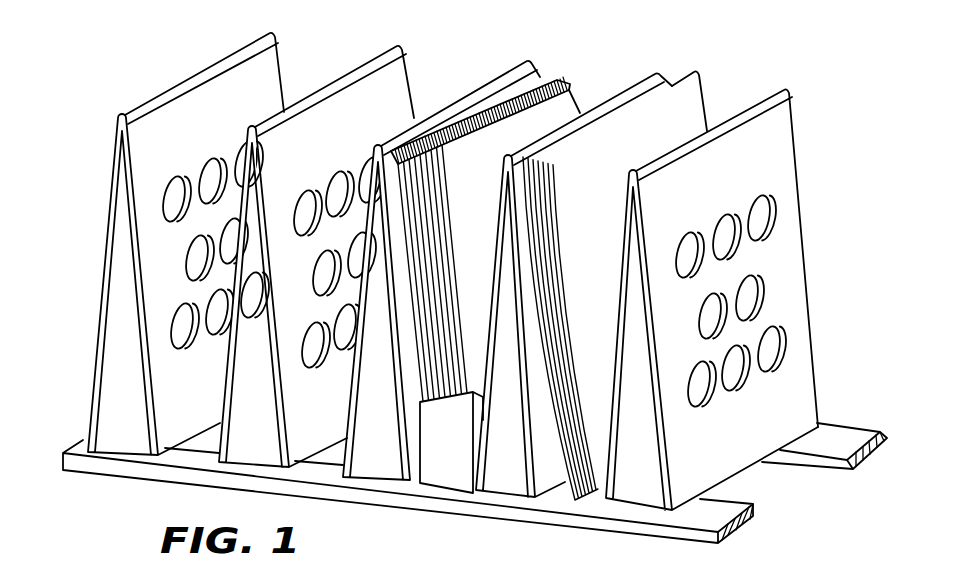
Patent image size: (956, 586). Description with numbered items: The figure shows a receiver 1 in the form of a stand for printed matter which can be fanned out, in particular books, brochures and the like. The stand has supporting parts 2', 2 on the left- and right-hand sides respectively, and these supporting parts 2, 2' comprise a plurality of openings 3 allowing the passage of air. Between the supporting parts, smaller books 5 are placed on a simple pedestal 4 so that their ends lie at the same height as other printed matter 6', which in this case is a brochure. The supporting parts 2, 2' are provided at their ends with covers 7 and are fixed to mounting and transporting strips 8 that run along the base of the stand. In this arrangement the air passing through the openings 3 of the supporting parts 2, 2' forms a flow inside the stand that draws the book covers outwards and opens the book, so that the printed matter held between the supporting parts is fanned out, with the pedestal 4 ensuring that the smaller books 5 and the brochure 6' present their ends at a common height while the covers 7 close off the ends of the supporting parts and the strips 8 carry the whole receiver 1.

The receiver 1 is at (140, 71).
The supporting part 2 is at (316, 241).
The supporting part 2' is at (159, 244).
The openings 3 is at (173, 193).
The pedestal 4 is at (447, 467).
The smaller books 5 is at (543, 110).
The printed matter 6' is at (591, 256).
The covers 7 is at (113, 395).
The mounting and transporting strips 8 is at (682, 525).